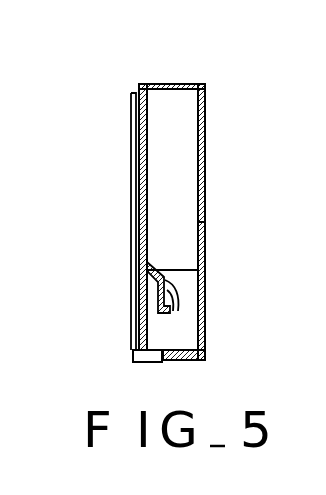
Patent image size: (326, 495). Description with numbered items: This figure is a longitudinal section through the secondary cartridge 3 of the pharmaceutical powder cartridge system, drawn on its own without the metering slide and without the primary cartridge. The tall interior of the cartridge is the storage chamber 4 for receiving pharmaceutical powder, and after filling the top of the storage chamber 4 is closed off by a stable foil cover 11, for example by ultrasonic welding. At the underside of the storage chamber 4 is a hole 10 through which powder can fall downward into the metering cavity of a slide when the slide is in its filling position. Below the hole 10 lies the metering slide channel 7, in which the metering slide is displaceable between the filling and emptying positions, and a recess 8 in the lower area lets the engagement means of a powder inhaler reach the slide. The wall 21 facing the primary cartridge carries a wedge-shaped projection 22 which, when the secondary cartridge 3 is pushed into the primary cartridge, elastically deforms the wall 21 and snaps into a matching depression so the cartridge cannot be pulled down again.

The secondary cartridge 3 is at (139, 217).
The storage chamber 4 is at (165, 135).
The metering slide channel 7 is at (160, 333).
The recess 8 is at (135, 358).
The hole 10 is at (147, 273).
The foil cover 11 is at (165, 85).
The wall 21 is at (205, 232).
The wedge-shaped projection 22 is at (205, 176).